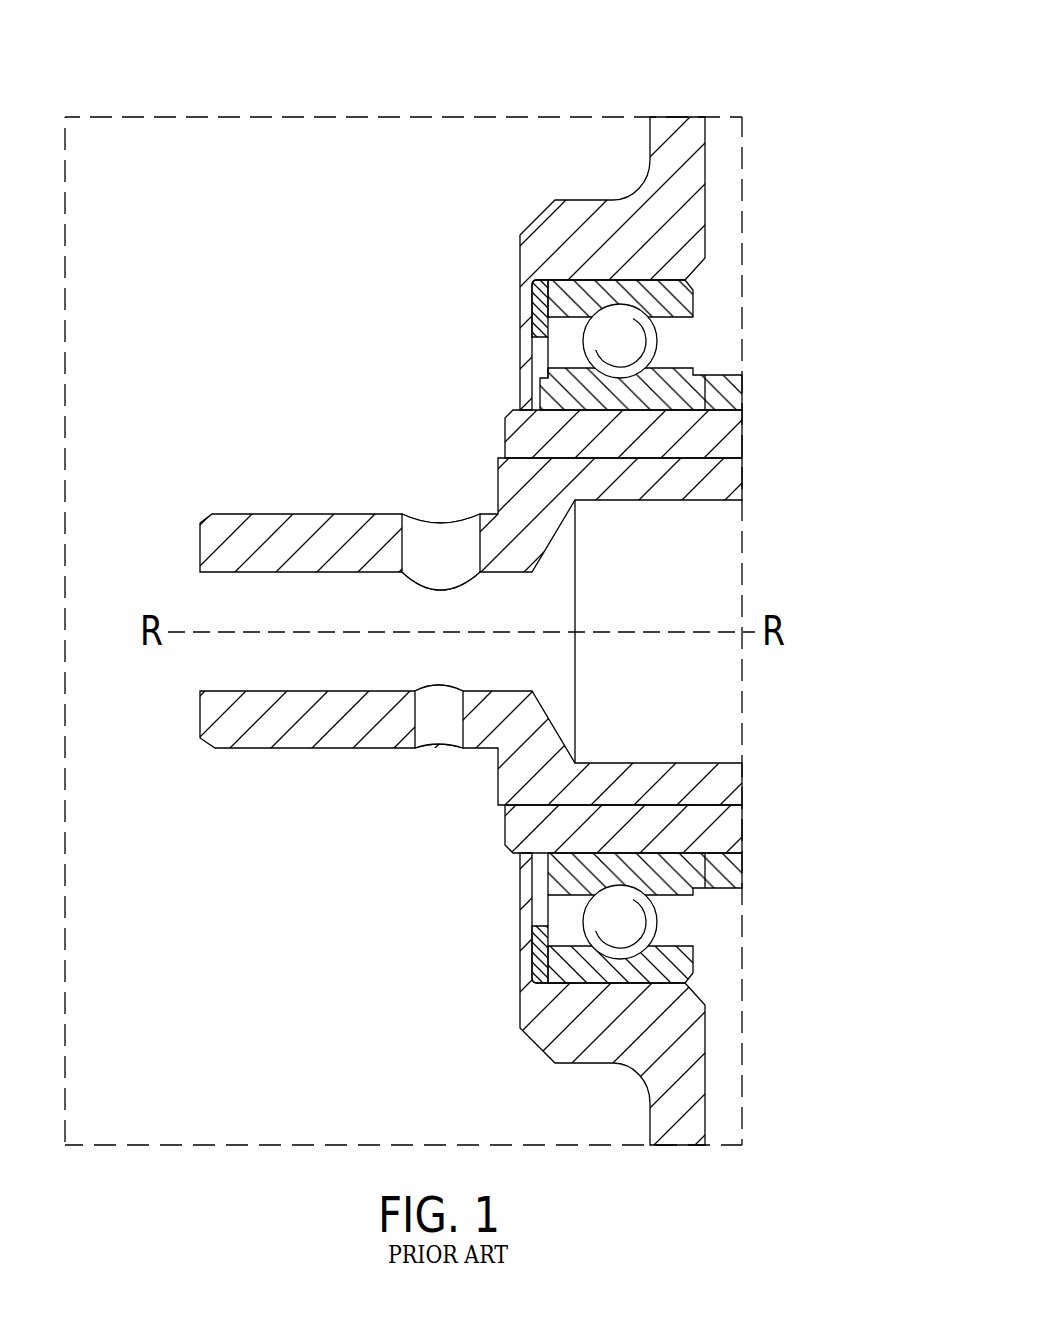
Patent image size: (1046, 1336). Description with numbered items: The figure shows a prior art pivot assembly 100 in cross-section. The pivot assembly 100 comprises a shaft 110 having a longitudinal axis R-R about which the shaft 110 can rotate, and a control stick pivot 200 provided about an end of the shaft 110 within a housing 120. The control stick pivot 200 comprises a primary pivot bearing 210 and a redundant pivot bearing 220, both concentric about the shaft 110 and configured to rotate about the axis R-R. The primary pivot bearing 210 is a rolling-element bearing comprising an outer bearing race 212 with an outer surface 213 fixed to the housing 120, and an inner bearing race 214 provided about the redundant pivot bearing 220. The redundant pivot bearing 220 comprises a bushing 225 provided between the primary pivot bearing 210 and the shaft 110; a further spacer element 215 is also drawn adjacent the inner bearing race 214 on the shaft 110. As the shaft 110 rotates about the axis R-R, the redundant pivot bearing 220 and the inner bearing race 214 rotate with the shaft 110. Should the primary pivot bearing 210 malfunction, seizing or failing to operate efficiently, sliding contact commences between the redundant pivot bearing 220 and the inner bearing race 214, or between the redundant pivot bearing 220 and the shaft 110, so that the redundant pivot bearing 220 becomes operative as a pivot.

The pivot assembly 100 is at (183, 97).
The shaft 110 is at (700, 483).
The housing 120 is at (673, 160).
The control stick pivot 200 is at (480, 407).
The primary pivot bearing 210 is at (753, 852).
The outer bearing race 212 is at (685, 301).
The outer surface 213 is at (650, 272).
The inner bearing race 214 is at (680, 392).
The spacer sleeve 215 is at (657, 416).
The redundant pivot bearing 220 is at (698, 823).
The bushing 225 is at (721, 820).